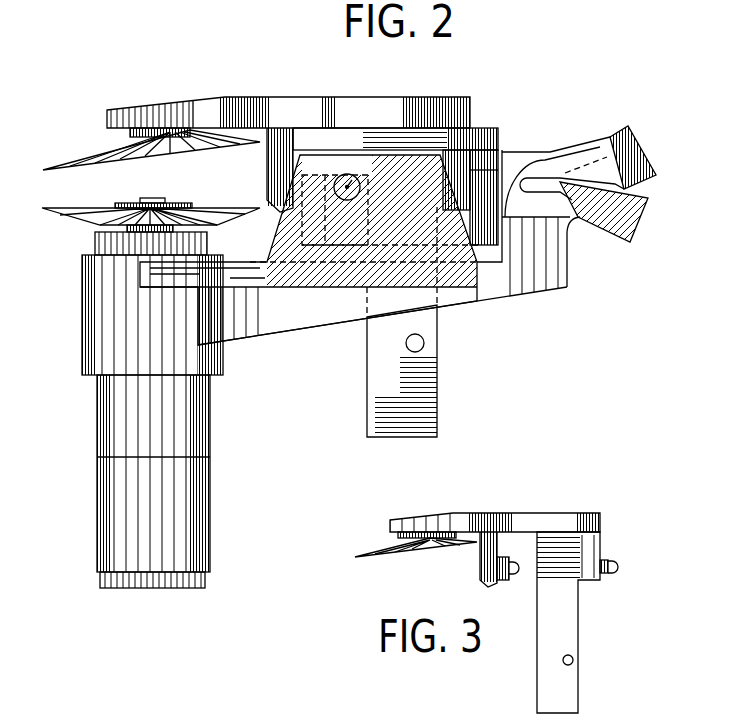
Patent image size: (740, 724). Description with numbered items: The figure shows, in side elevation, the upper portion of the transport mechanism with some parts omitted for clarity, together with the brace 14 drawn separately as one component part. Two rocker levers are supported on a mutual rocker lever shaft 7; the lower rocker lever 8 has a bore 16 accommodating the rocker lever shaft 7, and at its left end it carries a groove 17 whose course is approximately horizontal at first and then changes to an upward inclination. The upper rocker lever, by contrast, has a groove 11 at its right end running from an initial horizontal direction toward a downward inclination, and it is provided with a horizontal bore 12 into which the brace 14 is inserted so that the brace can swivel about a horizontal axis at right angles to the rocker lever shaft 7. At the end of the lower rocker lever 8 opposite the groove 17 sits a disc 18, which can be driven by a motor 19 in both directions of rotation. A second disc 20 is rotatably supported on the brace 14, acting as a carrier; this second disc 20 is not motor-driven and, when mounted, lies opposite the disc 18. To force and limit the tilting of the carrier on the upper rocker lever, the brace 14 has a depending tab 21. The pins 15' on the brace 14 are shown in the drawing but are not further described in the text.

In FIG. 2, the rocker lever shaft 7 is at (350, 188).
In FIG. 2, the lower rocker lever 8 is at (333, 330).
In FIG. 2, the groove 11 is at (620, 212).
In FIG. 2, the horizontal bore 12 is at (517, 216).
In FIG. 2, the brace 14 is at (333, 88).
In FIG. 3, the brace 14 is at (535, 474).
In FIG. 2, the pins 15' is at (476, 168).
In FIG. 3, the pins 15' is at (566, 567).
In FIG. 2, the bore 16 is at (352, 196).
In FIG. 2, the groove 17 is at (613, 167).
In FIG. 2, the disc 18 is at (57, 212).
In FIG. 2, the motor 19 is at (202, 425).
In FIG. 2, the second disc 20 is at (87, 157).
In FIG. 3, the second disc 20 is at (412, 545).
In FIG. 2, the depending tab 21 is at (415, 390).
In FIG. 3, the depending tab 21 is at (558, 643).